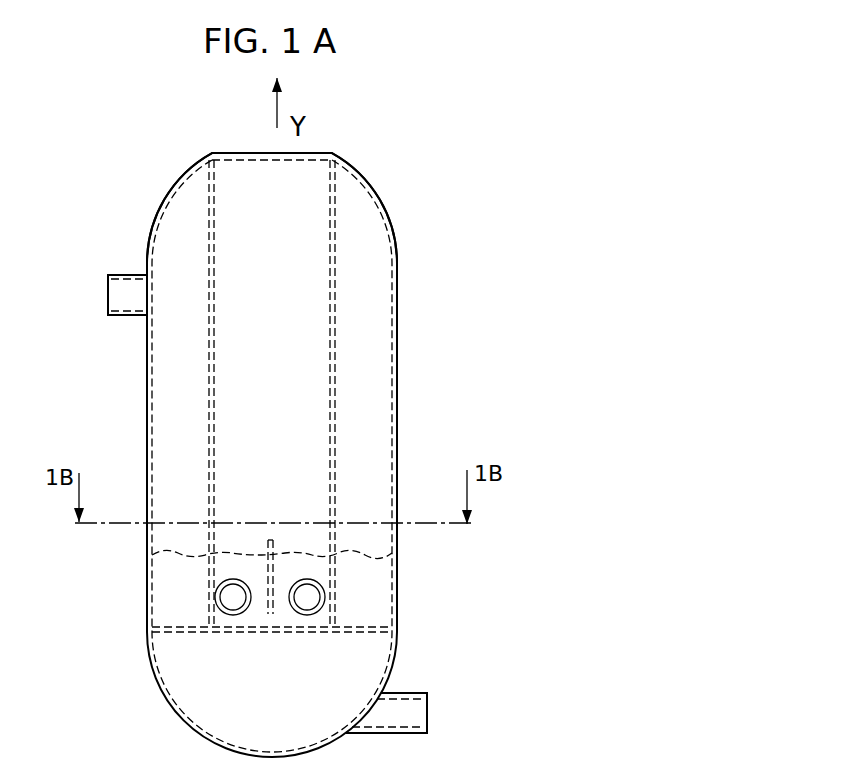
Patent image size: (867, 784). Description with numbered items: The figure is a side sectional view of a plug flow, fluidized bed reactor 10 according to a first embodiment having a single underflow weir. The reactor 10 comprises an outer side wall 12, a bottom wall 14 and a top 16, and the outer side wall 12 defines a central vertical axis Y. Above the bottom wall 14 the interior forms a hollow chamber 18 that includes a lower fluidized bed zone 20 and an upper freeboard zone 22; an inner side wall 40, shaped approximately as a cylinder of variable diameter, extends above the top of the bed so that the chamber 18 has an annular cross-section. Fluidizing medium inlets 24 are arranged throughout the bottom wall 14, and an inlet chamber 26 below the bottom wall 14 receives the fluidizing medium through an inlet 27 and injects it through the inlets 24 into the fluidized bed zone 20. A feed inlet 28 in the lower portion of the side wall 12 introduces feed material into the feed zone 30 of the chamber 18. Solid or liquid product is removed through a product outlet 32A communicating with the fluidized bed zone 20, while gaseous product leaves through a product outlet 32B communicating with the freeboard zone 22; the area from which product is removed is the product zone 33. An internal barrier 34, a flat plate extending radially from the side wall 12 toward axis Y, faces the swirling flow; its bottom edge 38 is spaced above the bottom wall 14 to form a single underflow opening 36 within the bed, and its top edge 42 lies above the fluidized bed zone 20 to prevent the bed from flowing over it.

The reactor 10 is at (397, 182).
The outer side wall 12 is at (402, 353).
The bottom wall 14 is at (197, 635).
The top 16 is at (190, 172).
The hollow chamber 18 is at (180, 383).
The fluidized bed zone 20 is at (367, 579).
The freeboard zone 22 is at (362, 447).
The fluidizing medium inlets 24 is at (178, 635).
The inlet chamber 26 is at (270, 716).
The inlet 27 is at (428, 692).
The feed inlet 28 is at (318, 600).
The feed zone 30 is at (350, 598).
The product outlet 32A is at (213, 594).
The product outlet 32B is at (108, 273).
The product zone 33 is at (178, 607).
The internal barrier 34 is at (277, 573).
The opening 36 is at (262, 628).
The bottom edge 38 is at (277, 615).
The inner side wall 40 is at (336, 268).
The top edge 42 is at (268, 540).